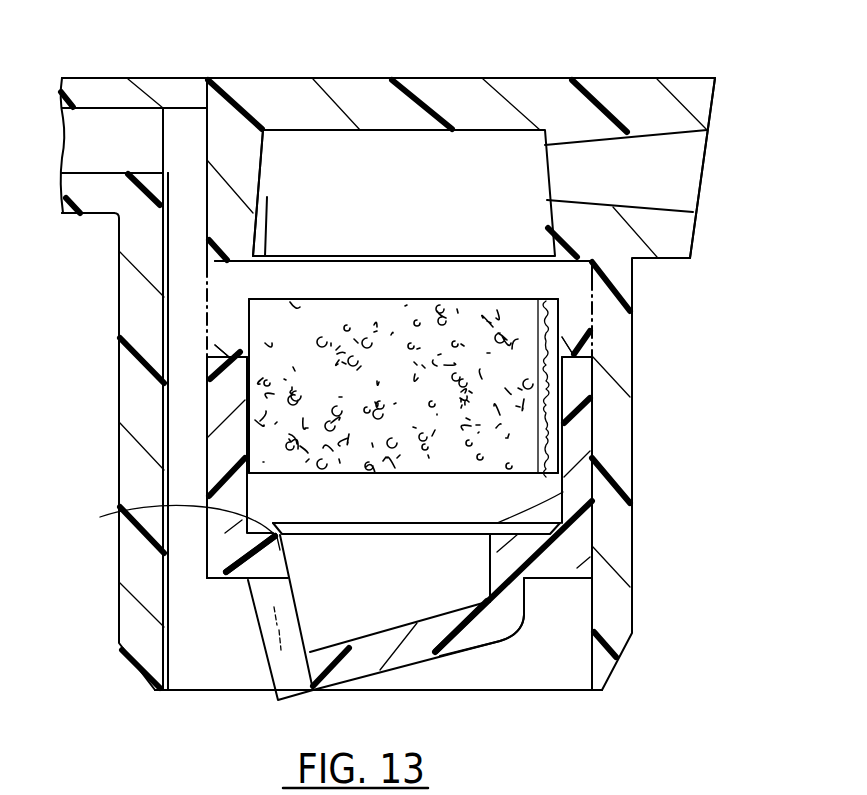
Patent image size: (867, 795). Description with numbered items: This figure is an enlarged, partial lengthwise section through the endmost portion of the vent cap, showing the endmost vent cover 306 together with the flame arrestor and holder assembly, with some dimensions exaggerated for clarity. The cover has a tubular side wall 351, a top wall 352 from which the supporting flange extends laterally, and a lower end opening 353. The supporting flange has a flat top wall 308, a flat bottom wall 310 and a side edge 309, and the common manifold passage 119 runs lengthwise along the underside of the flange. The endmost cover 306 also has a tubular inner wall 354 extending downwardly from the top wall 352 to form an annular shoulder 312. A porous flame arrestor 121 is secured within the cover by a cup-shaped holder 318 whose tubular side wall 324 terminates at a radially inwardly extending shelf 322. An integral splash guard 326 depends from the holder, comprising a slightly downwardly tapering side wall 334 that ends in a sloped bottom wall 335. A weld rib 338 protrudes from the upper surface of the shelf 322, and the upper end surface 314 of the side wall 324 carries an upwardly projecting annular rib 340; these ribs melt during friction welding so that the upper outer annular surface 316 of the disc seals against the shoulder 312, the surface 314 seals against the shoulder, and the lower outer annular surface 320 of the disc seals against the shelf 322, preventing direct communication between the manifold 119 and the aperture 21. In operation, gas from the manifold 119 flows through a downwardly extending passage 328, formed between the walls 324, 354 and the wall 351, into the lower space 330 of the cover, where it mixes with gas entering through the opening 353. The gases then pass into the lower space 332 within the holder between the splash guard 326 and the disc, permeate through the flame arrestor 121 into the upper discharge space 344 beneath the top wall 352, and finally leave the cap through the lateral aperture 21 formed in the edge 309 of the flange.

The aperture 21 is at (690, 178).
The manifold passage 119 is at (120, 150).
The flame arrestor 121 is at (370, 300).
The vent cover 306 is at (119, 598).
The top wall 308 is at (135, 53).
The side edge 309 is at (760, 74).
The bottom wall 310 is at (85, 213).
The annular shoulder 312 is at (222, 262).
The upper end surface 314 is at (242, 340).
The upper outer annular surface 316 is at (262, 298).
The holder 318 is at (245, 578).
The lower outer annular surface 320 is at (287, 477).
The shelf 322 is at (592, 510).
The side wall 324 is at (203, 425).
The splash guard 326 is at (391, 668).
The passage 328 is at (185, 403).
The lower space 330 is at (237, 672).
The lower space 332 is at (442, 596).
The side wall 334 is at (285, 654).
The bottom wall 335 is at (460, 650).
The weld rib 338 is at (119, 515).
The annular rib 340 is at (227, 350).
The upper discharge space 344 is at (452, 200).
The tubular side wall 351 is at (119, 483).
The top wall 352 is at (380, 90).
The lower end opening 353 is at (495, 690).
The tubular inner wall 354 is at (263, 162).